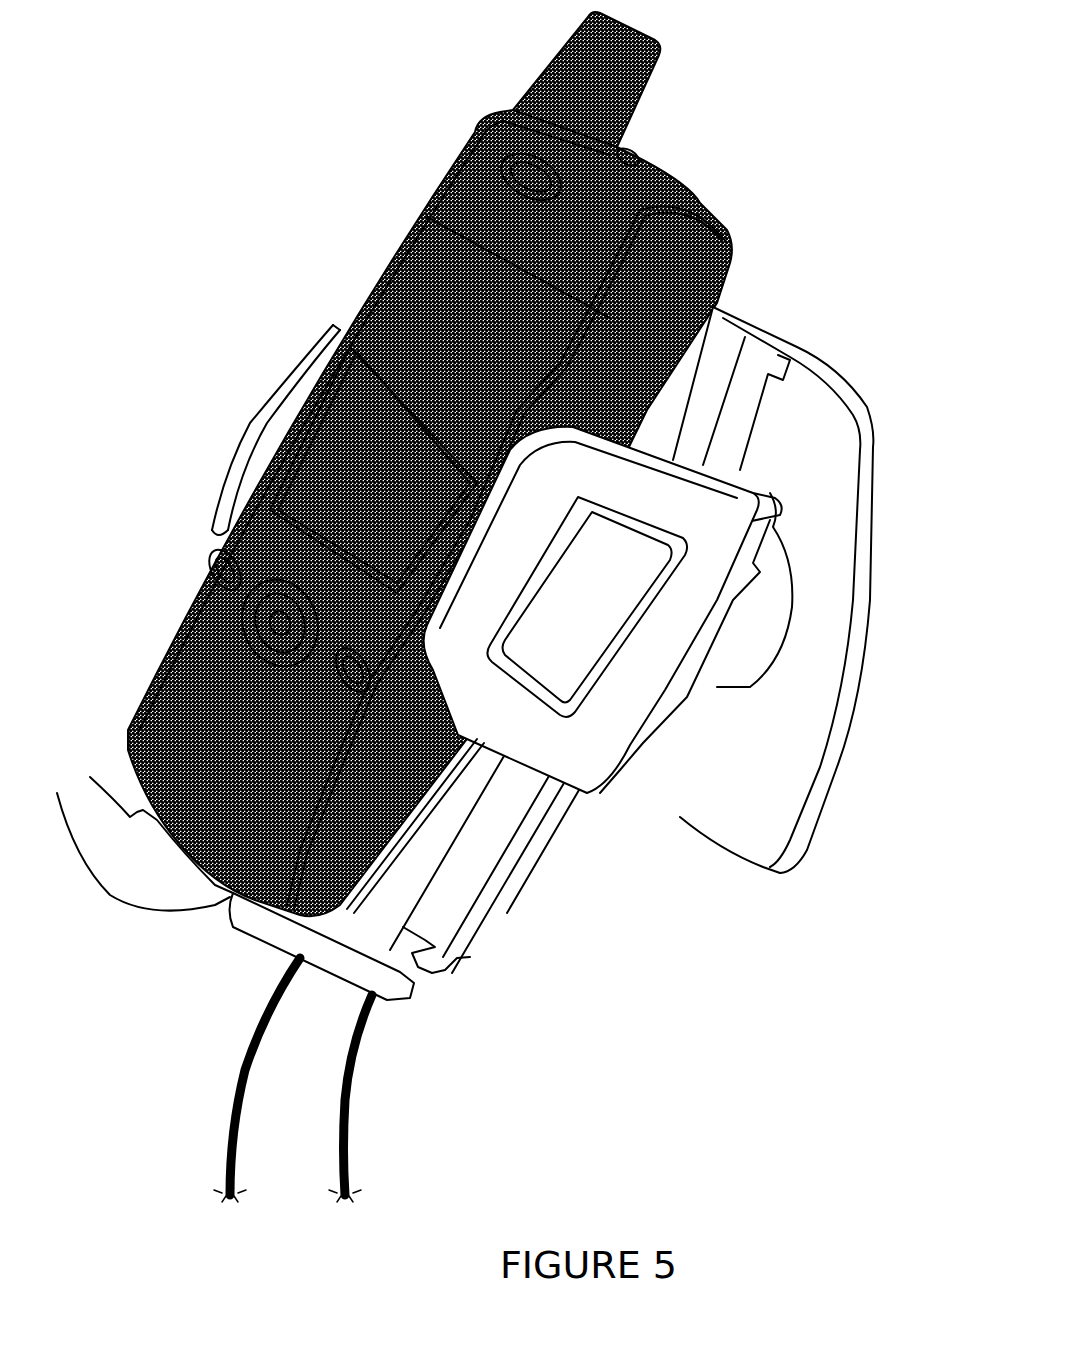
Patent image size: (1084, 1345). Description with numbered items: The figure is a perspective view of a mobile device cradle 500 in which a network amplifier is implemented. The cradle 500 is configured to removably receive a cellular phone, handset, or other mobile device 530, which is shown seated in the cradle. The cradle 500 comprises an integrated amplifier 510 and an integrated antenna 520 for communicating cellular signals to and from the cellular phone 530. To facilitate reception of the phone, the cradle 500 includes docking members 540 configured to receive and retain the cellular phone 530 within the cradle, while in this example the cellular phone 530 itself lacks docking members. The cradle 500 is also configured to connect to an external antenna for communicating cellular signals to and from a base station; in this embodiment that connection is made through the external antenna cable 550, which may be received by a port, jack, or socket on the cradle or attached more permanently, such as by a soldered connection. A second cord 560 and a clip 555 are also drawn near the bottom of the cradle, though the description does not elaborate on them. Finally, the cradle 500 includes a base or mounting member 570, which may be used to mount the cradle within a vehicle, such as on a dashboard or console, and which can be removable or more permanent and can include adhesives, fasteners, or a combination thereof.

The mobile device cradle 500 is at (600, 800).
The integrated amplifier 510 is at (500, 913).
The integrated antenna 520 is at (407, 927).
The cellular phone 530 is at (452, 148).
The docking members 540 is at (227, 482).
The external antenna cable 550 is at (230, 1103).
The clip 555 is at (136, 828).
The cord 560 is at (350, 1133).
The base or mounting member 570 is at (867, 395).